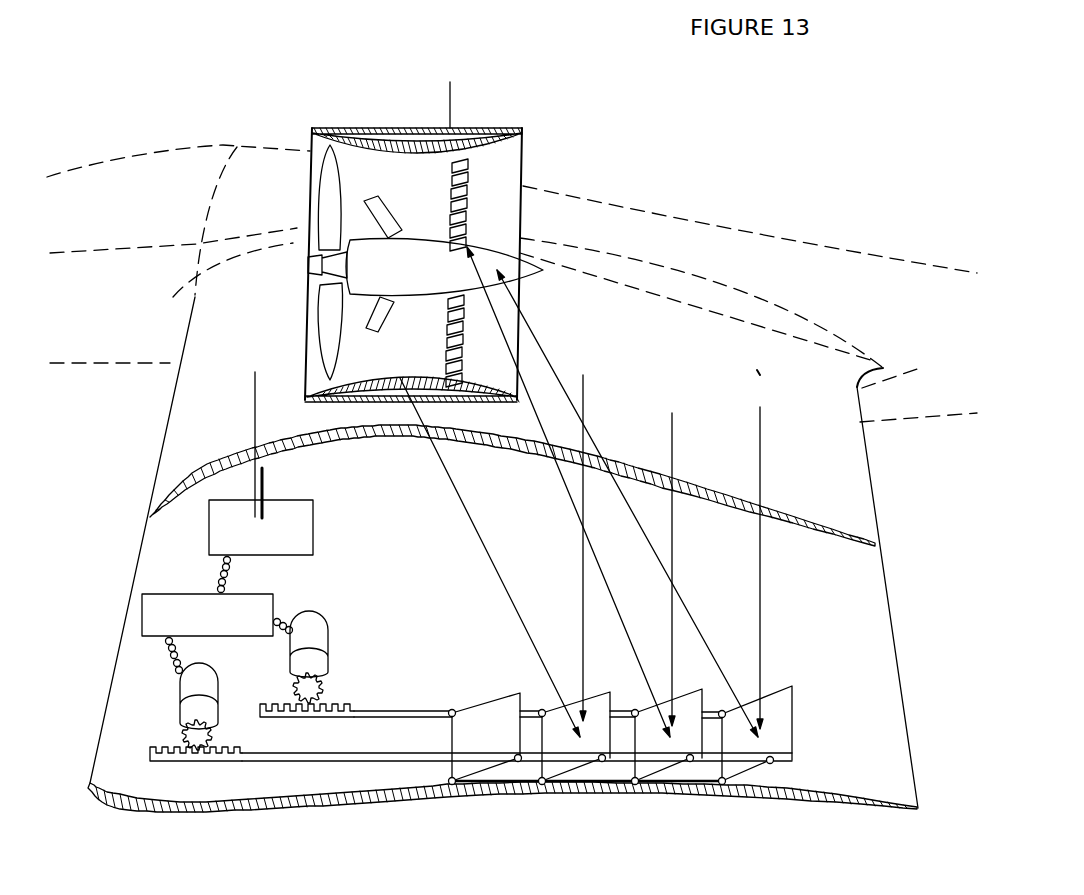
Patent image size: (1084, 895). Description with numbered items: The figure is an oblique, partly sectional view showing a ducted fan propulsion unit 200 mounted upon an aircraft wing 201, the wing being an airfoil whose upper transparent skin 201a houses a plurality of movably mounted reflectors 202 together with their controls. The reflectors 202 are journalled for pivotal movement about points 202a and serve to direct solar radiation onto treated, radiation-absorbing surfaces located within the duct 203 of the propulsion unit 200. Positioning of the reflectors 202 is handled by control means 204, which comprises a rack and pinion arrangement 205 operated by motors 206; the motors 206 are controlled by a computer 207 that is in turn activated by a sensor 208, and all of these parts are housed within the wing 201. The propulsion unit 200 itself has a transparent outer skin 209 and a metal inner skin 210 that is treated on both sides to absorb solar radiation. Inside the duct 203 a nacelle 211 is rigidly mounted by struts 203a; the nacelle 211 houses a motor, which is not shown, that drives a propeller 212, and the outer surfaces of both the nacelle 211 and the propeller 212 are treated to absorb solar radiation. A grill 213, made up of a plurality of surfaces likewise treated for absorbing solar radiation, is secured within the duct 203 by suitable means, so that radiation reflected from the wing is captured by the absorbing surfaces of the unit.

The ducted fan propulsion unit 200 is at (453, 51).
The aircraft wing 201 is at (760, 358).
The upper transparent skin 201a is at (188, 469).
The reflectors 202 is at (770, 725).
The pivot points 202a is at (553, 790).
The duct 203 is at (317, 168).
The struts 203a is at (380, 197).
The control means 204 is at (178, 556).
The rack and pinion arrangement 205 is at (203, 756).
The motors 206 is at (187, 690).
The computer 207 is at (227, 628).
The sensor 208 is at (300, 517).
The transparent outer skin 209 is at (457, 130).
The metal inner skin 210 is at (483, 187).
The nacelle 211 is at (523, 277).
The propeller 212 is at (330, 328).
The grill 213 is at (520, 215).